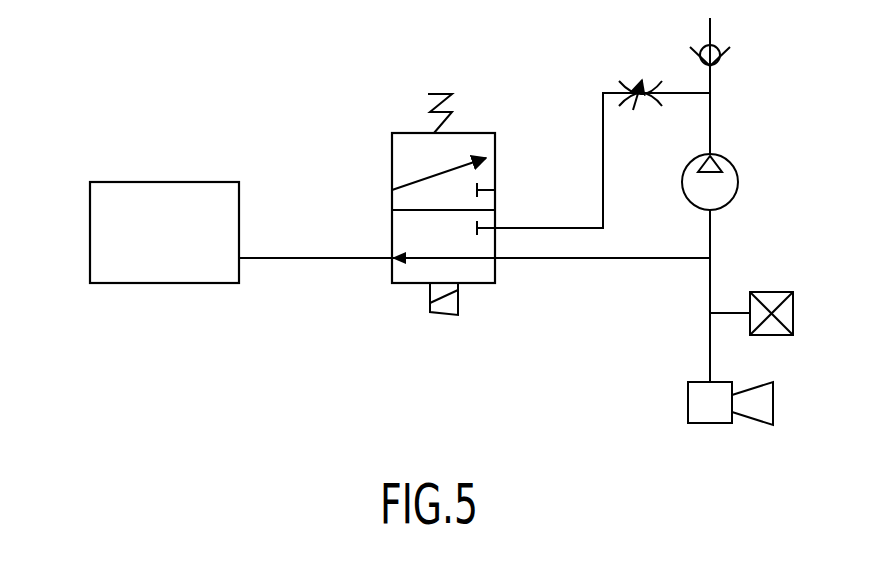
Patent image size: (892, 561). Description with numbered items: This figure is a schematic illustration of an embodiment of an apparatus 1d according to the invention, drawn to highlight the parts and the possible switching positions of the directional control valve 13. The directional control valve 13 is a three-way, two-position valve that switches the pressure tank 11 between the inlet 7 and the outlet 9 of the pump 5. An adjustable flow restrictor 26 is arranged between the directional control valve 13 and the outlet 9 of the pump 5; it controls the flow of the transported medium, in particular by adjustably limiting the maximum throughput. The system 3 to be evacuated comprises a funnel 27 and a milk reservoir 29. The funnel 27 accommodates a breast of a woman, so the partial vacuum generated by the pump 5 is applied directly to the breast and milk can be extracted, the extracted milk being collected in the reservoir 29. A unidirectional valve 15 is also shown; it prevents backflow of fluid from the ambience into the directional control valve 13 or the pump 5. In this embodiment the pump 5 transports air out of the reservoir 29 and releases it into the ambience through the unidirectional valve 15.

The apparatus 1d is at (157, 46).
The system 3 is at (474, 207).
The pump 5 is at (738, 172).
The inlet 7 is at (712, 212).
The outlet 9 is at (711, 156).
The pressure tank 11 is at (90, 230).
The directional control valve 13 is at (495, 172).
The unidirectional valve 15 is at (730, 57).
The adjustable flow restrictor 26 is at (640, 88).
The funnel 27 is at (752, 424).
The milk reservoir 29 is at (770, 292).